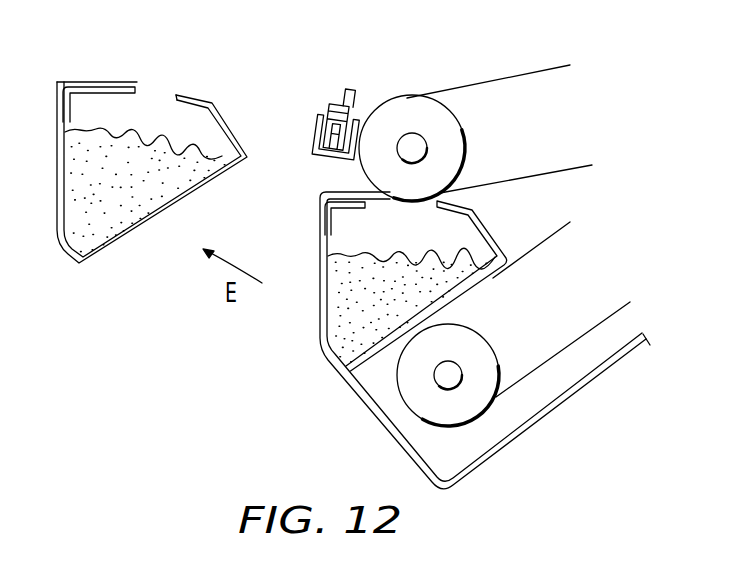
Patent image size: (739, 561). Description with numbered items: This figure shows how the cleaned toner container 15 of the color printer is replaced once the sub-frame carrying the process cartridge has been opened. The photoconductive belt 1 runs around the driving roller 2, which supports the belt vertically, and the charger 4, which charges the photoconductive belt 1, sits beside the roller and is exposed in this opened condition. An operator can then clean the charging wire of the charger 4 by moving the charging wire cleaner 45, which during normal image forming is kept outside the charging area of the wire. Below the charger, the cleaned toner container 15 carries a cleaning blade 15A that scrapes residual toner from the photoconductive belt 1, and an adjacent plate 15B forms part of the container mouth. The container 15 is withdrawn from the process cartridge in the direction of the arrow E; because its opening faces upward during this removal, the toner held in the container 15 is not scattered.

The photoconductive belt 1 is at (499, 78).
The driving roller 2 is at (405, 108).
The charger 4 is at (315, 138).
The charging wire cleaner 45 is at (347, 88).
The cleaned toner container 15 is at (80, 265).
The cleaning blade 15A is at (107, 83).
The container plate 15B is at (160, 95).